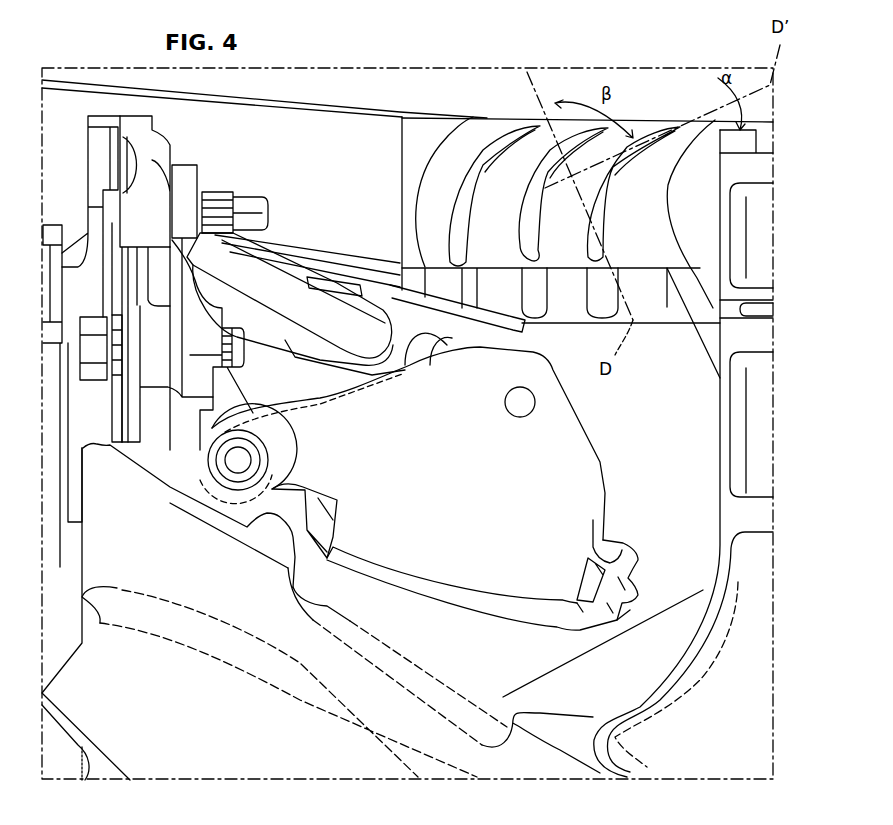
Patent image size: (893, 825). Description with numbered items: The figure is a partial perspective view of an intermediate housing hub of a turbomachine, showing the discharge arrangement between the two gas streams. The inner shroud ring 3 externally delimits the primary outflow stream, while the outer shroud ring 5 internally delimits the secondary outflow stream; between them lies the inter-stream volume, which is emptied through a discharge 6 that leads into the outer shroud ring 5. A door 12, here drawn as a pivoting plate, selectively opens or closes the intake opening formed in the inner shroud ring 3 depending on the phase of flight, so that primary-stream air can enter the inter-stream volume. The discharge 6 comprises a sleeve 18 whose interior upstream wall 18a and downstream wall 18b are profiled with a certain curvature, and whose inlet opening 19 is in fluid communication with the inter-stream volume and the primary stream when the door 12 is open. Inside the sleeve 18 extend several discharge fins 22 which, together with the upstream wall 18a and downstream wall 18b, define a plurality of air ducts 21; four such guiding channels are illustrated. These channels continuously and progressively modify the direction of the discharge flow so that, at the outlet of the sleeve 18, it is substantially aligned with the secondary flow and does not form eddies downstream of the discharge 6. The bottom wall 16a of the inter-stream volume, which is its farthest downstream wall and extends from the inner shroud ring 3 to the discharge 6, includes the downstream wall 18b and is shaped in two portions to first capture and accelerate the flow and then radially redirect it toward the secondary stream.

The inner shroud ring 3 is at (153, 550).
The outer shroud ring 5 is at (766, 122).
The discharge 6 is at (634, 103).
The door 12 is at (523, 472).
The bottom wall 16a is at (718, 455).
The sleeve 18 is at (645, 228).
The upstream wall 18a is at (437, 143).
The downstream wall 18b is at (680, 146).
The inlet opening 19 is at (663, 305).
The air ducts 21 is at (454, 296).
The discharge fins 22 is at (490, 153).